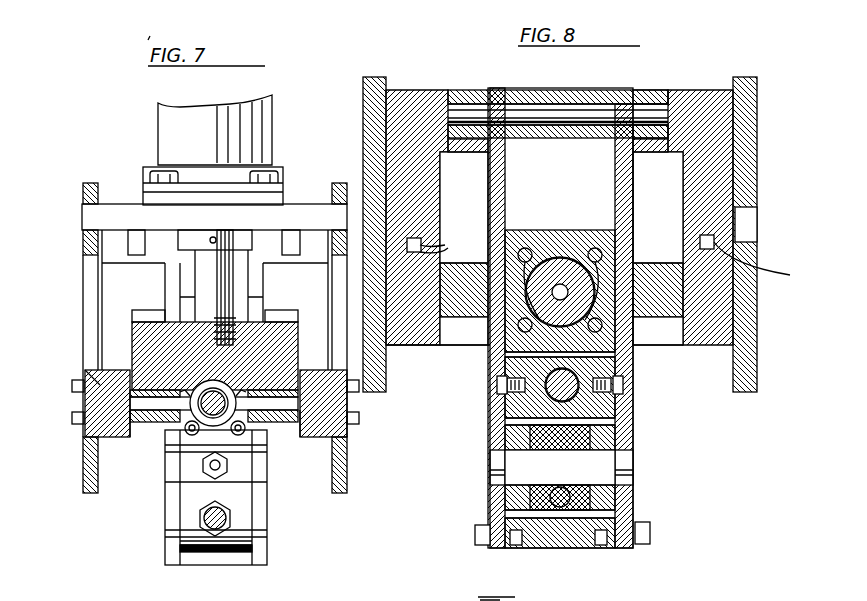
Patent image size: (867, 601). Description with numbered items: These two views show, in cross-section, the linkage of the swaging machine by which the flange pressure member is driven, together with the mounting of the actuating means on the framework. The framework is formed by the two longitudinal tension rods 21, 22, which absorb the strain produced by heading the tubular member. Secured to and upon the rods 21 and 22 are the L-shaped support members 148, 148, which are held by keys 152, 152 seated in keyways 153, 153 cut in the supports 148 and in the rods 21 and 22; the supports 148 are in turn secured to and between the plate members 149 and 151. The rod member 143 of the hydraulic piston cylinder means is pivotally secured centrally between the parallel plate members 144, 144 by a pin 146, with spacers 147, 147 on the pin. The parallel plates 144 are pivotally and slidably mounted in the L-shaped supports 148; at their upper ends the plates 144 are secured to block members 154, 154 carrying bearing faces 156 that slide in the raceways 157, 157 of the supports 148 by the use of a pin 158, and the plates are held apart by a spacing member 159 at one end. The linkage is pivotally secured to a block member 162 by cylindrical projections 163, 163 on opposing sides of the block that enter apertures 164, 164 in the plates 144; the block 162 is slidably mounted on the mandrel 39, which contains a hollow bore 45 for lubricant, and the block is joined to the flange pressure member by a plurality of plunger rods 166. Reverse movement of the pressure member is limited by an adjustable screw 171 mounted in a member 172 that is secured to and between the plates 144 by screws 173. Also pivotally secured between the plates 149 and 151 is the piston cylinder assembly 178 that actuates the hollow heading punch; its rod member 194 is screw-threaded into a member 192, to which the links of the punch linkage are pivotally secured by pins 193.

In FIG. 7, the longitudinal tension rod 21 is at (100, 385).
In FIG. 8, the longitudinal tension rod 21 is at (425, 345).
In FIG. 7, the longitudinal tension rod 22 is at (325, 410).
In FIG. 8, the mandrel 39 is at (575, 255).
In FIG. 8, the hollow bore 45 is at (495, 360).
In FIG. 7, the rod member 143 is at (226, 517).
In FIG. 8, the rod member 143 is at (560, 505).
In FIG. 7, the parallel plate member 144 is at (170, 522).
In FIG. 8, the parallel plate member 144 is at (492, 500).
In FIG. 8, the pin 146 is at (505, 465).
In FIG. 7, the spacer 147 is at (185, 538).
In FIG. 8, the spacer 147 is at (492, 525).
In FIG. 8, the L-shaped support member 148 is at (404, 92).
In FIG. 7, the plate member 149 is at (83, 190).
In FIG. 8, the plate member 149 is at (363, 77).
In FIG. 8, the plate member 151 is at (745, 142).
In FIG. 8, the key 152 is at (707, 235).
In FIG. 8, the keyway 153 is at (422, 245).
In FIG. 8, the block member 154 is at (470, 103).
In FIG. 8, the bearing face 156 is at (455, 90).
In FIG. 8, the raceway 157 is at (447, 150).
In FIG. 8, the pin 158 is at (655, 115).
In FIG. 7, the spacing member 159 is at (206, 566).
In FIG. 8, the spacing member 159 is at (636, 520).
In FIG. 8, the block member 162 is at (545, 235).
In FIG. 8, the cylindrical projection 163 is at (492, 265).
In FIG. 8, the aperture 164 is at (490, 330).
In FIG. 7, the plunger rod 166 is at (190, 436).
In FIG. 8, the plunger rod 166 is at (515, 240).
In FIG. 7, the adjustable screw 171 is at (225, 467).
In FIG. 8, the adjustable screw 171 is at (498, 425).
In FIG. 7, the member 172 is at (185, 478).
In FIG. 8, the member 172 is at (515, 378).
In FIG. 8, the screw 173 is at (512, 393).
In FIG. 7, the piston cylinder assembly 178 is at (266, 135).
In FIG. 7, the member 192 is at (153, 322).
In FIG. 7, the pin 193 is at (105, 435).
In FIG. 7, the rod member 194 is at (228, 286).